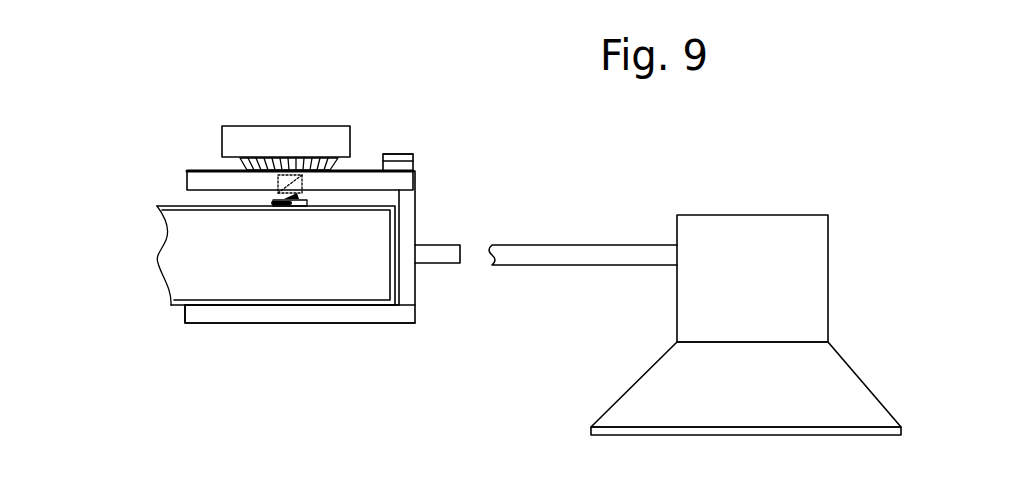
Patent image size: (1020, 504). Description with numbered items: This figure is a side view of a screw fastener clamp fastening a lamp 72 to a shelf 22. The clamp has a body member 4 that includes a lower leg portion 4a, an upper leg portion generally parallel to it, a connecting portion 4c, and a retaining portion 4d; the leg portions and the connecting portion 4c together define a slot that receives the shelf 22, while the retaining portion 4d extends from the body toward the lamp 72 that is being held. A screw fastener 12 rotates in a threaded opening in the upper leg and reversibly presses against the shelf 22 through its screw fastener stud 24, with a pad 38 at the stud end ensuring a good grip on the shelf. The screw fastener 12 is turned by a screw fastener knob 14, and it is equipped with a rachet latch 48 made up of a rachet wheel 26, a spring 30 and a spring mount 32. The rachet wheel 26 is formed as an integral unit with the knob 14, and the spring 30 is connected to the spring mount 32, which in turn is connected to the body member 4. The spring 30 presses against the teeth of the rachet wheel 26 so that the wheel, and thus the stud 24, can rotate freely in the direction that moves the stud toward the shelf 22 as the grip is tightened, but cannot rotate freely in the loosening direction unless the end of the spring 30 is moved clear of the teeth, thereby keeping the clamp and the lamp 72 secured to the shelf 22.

The body member 4 is at (431, 252).
The lower leg portion 4a is at (305, 325).
The connecting portion 4c is at (405, 233).
The retaining portion 4d is at (430, 255).
The screw fastener 12 is at (236, 91).
The screw fastener knob 14 is at (292, 145).
The shelf 22 is at (197, 255).
The screw fastener stud 24 is at (275, 193).
The rachet wheel 26 is at (245, 167).
The spring 30 is at (352, 167).
The spring mount 32 is at (415, 157).
The pad 38 is at (277, 202).
The rachet latch 48 is at (400, 148).
The lamp 72 is at (746, 209).